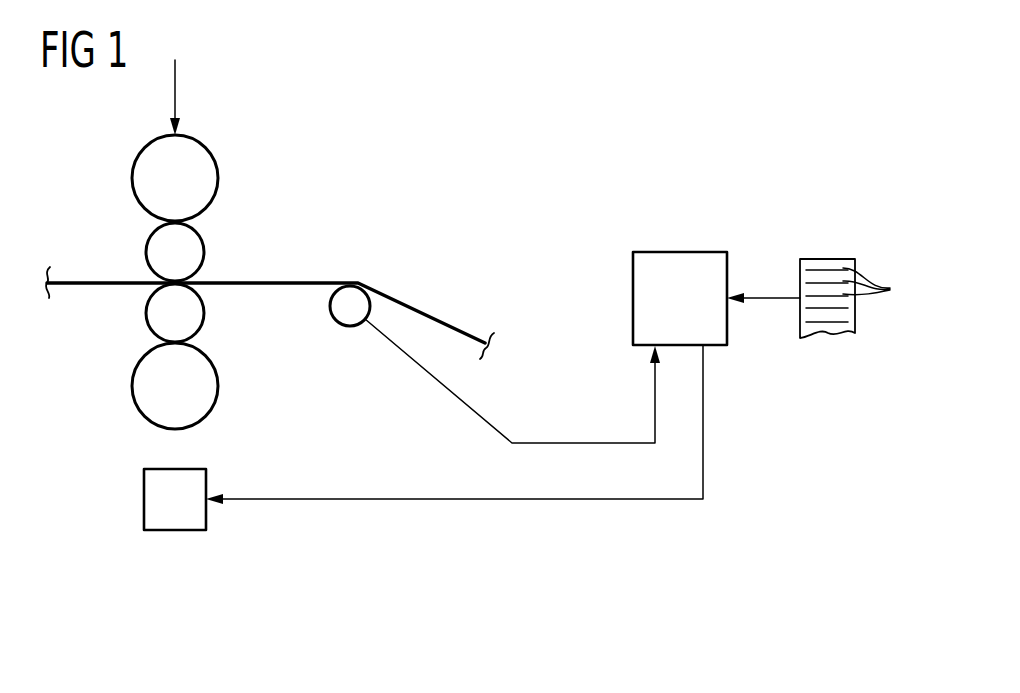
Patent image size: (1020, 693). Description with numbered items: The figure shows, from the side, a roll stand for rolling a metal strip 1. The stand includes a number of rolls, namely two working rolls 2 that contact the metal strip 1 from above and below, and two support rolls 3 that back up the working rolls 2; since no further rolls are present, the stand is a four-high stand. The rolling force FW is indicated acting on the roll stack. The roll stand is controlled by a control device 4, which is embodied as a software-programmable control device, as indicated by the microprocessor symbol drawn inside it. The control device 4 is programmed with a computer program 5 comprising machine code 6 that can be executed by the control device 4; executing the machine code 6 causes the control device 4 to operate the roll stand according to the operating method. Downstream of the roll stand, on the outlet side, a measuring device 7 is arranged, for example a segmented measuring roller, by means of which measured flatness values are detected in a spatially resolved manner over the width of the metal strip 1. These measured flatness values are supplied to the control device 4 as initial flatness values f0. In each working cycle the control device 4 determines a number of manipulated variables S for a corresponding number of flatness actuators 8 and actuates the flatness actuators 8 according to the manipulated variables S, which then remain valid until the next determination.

The metal strip 1 is at (266, 282).
The working rolls 2 is at (147, 252).
The support rolls 3 is at (132, 178).
The control device 4 is at (678, 252).
The computer program 5 is at (826, 259).
The machine code 6 is at (875, 285).
The measuring device 7 is at (352, 327).
The flatness actuators 8 is at (144, 500).
The rolling force FW is at (175, 90).
The initial flatness values f0 is at (585, 443).
The manipulated variables S is at (290, 499).